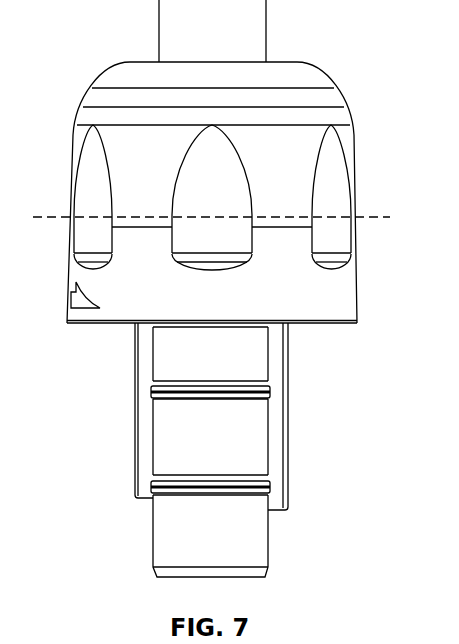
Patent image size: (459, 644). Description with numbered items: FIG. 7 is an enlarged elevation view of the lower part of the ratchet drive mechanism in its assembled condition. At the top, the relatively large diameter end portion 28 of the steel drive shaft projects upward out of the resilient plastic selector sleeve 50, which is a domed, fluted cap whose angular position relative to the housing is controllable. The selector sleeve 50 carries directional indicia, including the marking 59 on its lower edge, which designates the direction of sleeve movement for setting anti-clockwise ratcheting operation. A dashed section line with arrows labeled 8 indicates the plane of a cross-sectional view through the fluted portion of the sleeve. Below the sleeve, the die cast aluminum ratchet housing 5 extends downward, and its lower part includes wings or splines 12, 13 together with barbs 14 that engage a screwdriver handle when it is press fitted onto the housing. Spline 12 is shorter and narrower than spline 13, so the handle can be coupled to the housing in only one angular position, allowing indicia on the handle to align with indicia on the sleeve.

The end portion of the drive shaft 28 is at (170, 22).
The selector sleeve 50 is at (340, 64).
The section line 8- 8 is at (33, 217).
The marking 59 is at (82, 302).
The spline 12 is at (137, 442).
The spline 13 is at (288, 440).
The barbs 14 is at (270, 392).
The ratchet housing 5 is at (136, 532).